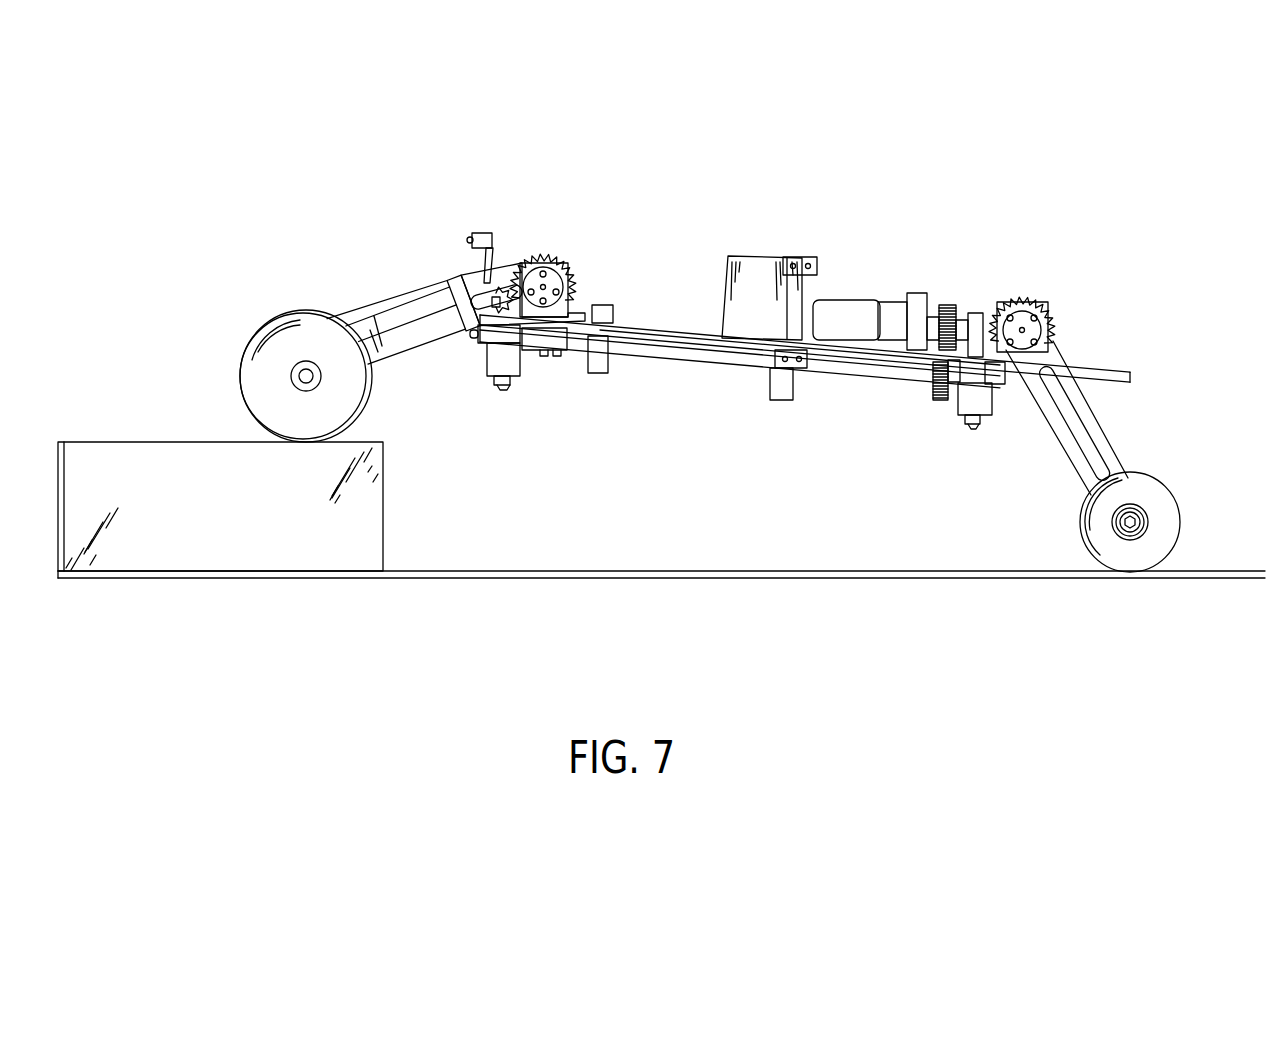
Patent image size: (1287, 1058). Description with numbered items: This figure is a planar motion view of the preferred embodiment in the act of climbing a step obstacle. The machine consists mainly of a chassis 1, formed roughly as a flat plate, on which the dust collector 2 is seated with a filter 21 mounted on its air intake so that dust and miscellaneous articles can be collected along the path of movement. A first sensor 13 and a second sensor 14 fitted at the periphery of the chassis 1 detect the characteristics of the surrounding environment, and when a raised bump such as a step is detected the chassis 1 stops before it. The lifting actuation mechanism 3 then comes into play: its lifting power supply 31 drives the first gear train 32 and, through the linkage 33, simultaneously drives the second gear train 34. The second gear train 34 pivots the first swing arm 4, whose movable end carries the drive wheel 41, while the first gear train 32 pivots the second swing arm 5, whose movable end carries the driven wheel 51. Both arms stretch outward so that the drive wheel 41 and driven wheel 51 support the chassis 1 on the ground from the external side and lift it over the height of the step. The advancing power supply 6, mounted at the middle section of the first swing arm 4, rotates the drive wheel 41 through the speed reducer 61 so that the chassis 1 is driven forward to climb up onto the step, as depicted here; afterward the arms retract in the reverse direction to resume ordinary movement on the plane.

The chassis 1 is at (1133, 368).
The dust collector 2 is at (752, 318).
The lifting actuation mechanism 3 is at (933, 178).
The first swing arm 4 is at (383, 362).
The second swing arm 5 is at (1108, 447).
The advancing power supply 6 is at (410, 318).
The first sensor 13 is at (478, 238).
The second sensor 14 is at (800, 268).
The filter 21 is at (789, 382).
The lifting power supply 31 is at (856, 315).
The first gear train 32 is at (1012, 298).
The linkage 33 is at (707, 358).
The second gear train 34 is at (566, 268).
The drive wheel 41 is at (268, 346).
The driven wheel 51 is at (1165, 512).
The speed reducer 61 is at (363, 332).